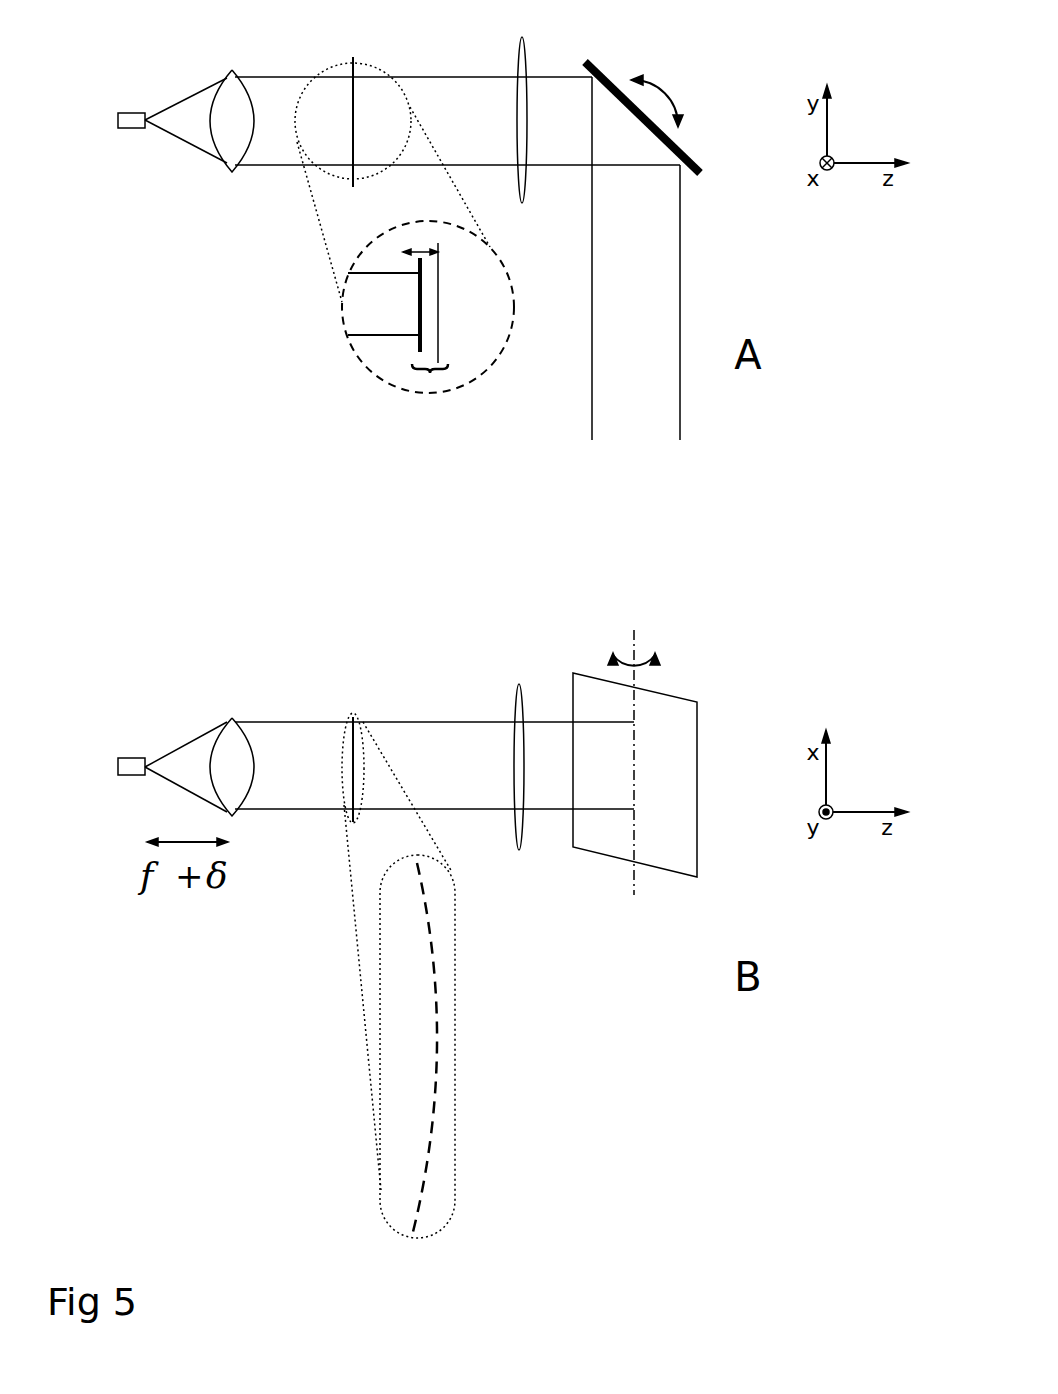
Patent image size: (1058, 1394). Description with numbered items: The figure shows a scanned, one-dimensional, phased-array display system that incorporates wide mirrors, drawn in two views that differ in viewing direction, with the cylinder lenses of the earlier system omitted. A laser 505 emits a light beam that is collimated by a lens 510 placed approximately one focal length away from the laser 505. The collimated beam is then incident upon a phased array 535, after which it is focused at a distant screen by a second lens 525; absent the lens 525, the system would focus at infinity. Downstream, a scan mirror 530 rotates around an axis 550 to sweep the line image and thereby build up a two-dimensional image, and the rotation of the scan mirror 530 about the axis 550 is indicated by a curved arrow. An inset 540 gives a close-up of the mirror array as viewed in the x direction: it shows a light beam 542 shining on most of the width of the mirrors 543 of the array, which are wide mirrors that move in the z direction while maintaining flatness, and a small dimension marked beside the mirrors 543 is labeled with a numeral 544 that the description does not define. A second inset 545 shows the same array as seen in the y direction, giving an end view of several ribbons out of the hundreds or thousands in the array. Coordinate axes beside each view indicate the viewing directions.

In FIG. 5A, the laser 505 is at (132, 113).
In FIG. 5B, the laser 505 is at (133, 755).
In FIG. 5A, the lens 510 is at (227, 83).
In FIG. 5B, the lens 510 is at (230, 718).
In FIG. 5A, the lens 525 is at (523, 57).
In FIG. 5B, the lens 525 is at (522, 695).
In FIG. 5A, the scan mirror 530 is at (683, 143).
In FIG. 5B, the scan mirror 530 is at (685, 780).
In FIG. 5A, the phased array 535 is at (348, 97).
In FIG. 5B, the phased array 535 is at (352, 732).
In FIG. 5A, the inset 540 is at (362, 363).
In FIG. 5A, the light beam 542 is at (358, 318).
In FIG. 5A, the mirrors 543 is at (417, 345).
In FIG. 5A, the modulator thickness 544 is at (427, 372).
In FIG. 5B, the inset 545 is at (455, 1073).
In FIG. 5B, the axis 550 is at (638, 632).